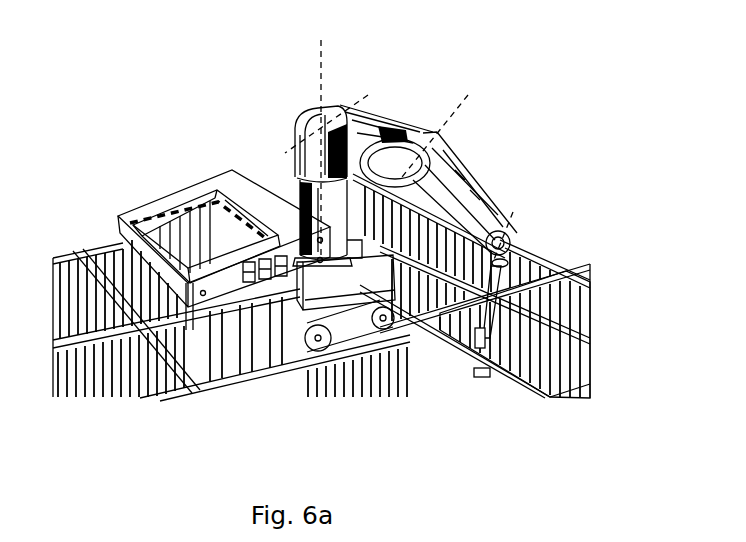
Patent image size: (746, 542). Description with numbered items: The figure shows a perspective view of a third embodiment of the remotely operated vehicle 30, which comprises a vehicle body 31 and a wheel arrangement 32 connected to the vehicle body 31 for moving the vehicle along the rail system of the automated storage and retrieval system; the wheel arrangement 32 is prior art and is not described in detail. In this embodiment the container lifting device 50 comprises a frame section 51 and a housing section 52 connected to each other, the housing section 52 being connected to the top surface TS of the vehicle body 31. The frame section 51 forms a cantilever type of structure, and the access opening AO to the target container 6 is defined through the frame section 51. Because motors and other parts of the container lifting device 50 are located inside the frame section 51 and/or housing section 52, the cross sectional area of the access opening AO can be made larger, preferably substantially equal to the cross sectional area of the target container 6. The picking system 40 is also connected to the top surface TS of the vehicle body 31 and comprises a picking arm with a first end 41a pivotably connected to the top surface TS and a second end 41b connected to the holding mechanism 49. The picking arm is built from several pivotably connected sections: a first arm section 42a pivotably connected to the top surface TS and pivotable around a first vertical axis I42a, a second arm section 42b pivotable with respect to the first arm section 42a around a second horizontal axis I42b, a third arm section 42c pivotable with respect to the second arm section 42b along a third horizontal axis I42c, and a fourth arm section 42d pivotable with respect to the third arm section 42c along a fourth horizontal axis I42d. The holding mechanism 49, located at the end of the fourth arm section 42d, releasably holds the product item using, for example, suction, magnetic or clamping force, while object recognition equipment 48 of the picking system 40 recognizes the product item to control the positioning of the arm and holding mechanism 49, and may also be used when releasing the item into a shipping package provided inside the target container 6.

The remotely operated vehicle 30 is at (87, 73).
The container lifting device 50 is at (104, 213).
The target container 6 is at (155, 308).
The housing section 52 is at (245, 185).
The frame section 51 is at (233, 273).
The access opening AO is at (173, 208).
The picking system 40 is at (515, 110).
The first arm section 42a is at (312, 143).
The first vertical axis I42a is at (324, 135).
The second arm section 42b is at (410, 137).
The second horizontal axis I42b is at (343, 111).
The third arm section 42c is at (477, 200).
The third horizontal axis I42c is at (456, 123).
The fourth arm section 42d is at (487, 300).
The fourth horizontal axis I42d is at (524, 228).
The first end 41a is at (294, 181).
The second end 41b is at (533, 336).
The object recognition equipment 48 is at (485, 343).
The holding mechanism 49 is at (490, 373).
The vehicle body 31 is at (353, 277).
The wheel arrangement 32 is at (341, 363).
The top surface TS is at (355, 240).